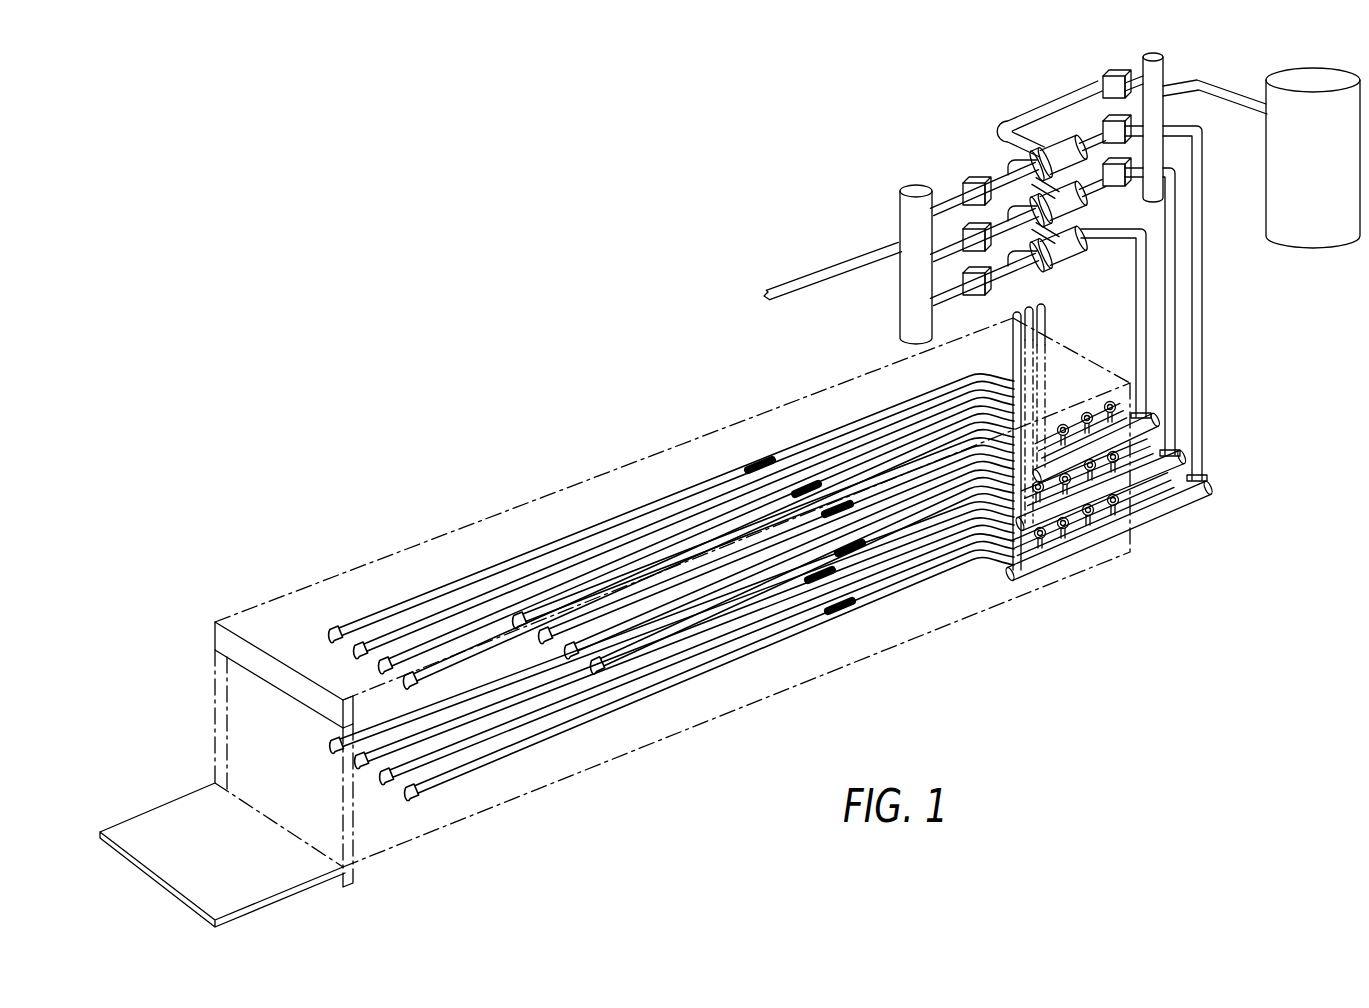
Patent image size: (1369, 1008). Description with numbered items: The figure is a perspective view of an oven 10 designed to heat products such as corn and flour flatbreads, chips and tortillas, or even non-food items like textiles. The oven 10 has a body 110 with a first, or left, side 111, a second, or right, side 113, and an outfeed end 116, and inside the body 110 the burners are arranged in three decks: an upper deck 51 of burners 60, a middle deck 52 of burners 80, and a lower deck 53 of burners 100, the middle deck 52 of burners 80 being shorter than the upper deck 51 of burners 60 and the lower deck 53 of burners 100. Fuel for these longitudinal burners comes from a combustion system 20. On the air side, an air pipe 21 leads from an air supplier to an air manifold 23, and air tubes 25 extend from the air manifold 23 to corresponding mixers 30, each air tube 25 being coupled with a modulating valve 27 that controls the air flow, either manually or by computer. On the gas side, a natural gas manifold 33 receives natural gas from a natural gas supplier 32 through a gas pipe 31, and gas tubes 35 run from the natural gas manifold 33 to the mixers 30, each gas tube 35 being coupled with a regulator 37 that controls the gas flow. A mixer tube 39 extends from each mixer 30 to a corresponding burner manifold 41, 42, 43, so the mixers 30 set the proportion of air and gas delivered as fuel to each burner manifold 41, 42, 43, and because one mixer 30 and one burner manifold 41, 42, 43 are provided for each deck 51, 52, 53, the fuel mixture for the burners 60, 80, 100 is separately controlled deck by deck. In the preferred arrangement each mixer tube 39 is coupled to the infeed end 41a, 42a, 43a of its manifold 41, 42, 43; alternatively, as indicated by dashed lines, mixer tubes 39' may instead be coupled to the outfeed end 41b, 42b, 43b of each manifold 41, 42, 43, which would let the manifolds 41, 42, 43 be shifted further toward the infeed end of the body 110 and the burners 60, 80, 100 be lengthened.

The oven 10 is at (462, 274).
The combustion system 20 is at (976, 130).
The air pipe 21 is at (812, 284).
The air manifold 23 is at (905, 220).
The air tubes 25 is at (948, 211).
The modulating valve 27 is at (978, 181).
The mixers 30 is at (1079, 207).
The gas pipe 31 is at (1240, 96).
The natural gas supplier 32 is at (1274, 161).
The natural gas manifold 33 is at (1142, 60).
The gas tubes 35 is at (1096, 148).
The regulator 37 is at (1117, 163).
The mixer tube 39 is at (1162, 303).
The mixer tubes 39' is at (1017, 425).
The burner manifold 41 is at (1138, 431).
The infeed end of manifold 41a is at (1152, 414).
The outfeed end of manifold 41b is at (1033, 480).
The burner manifold 42 is at (1140, 476).
The infeed end of manifold 42a is at (1182, 453).
The outfeed end of manifold 42b is at (1020, 530).
The burner manifold 43 is at (1157, 507).
The infeed end of manifold 43a is at (1208, 488).
The outfeed end of manifold 43b is at (1010, 580).
The upper deck 51 is at (316, 605).
The middle deck 52 is at (580, 677).
The lower deck 53 is at (322, 767).
The burners 60 is at (702, 563).
The burners 80 is at (600, 587).
The burners 100 is at (412, 798).
The body 110 is at (567, 478).
The first side 111 is at (354, 832).
The second side 113 is at (218, 719).
The outfeed end 116 is at (216, 646).